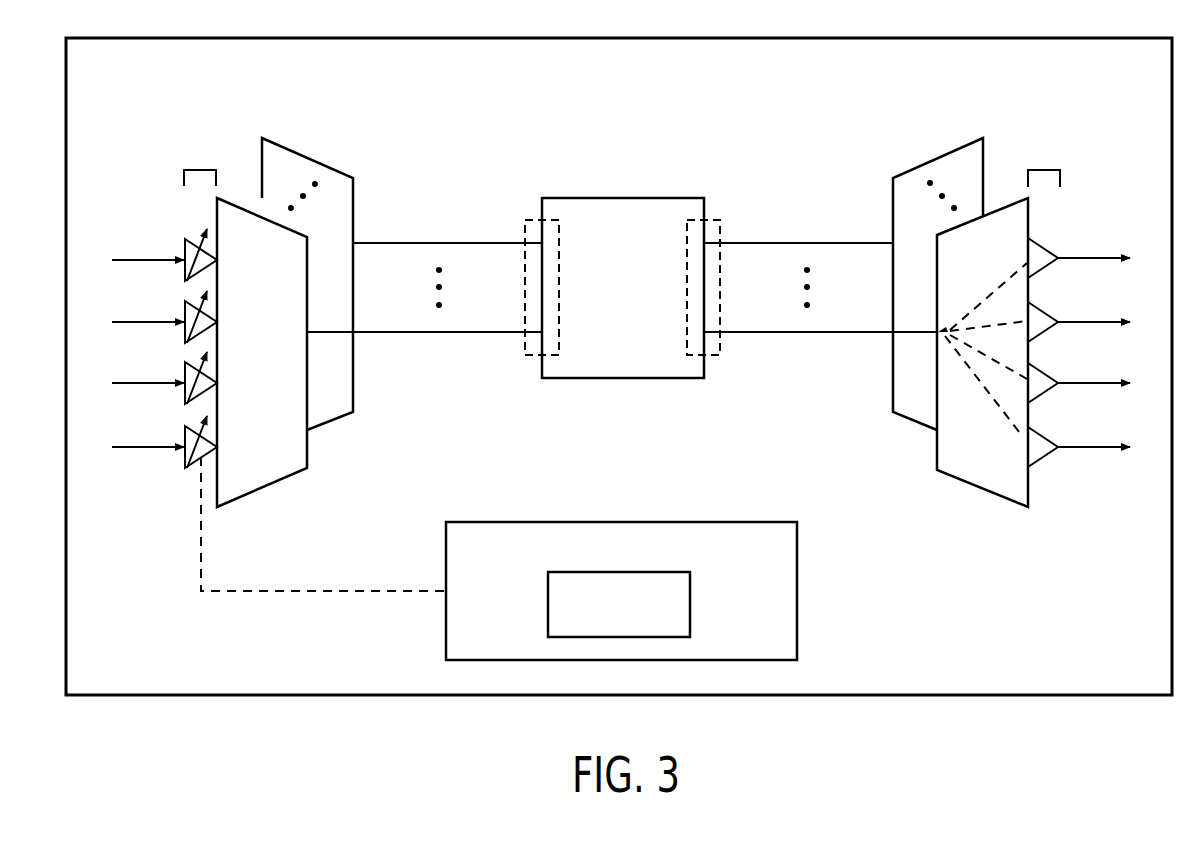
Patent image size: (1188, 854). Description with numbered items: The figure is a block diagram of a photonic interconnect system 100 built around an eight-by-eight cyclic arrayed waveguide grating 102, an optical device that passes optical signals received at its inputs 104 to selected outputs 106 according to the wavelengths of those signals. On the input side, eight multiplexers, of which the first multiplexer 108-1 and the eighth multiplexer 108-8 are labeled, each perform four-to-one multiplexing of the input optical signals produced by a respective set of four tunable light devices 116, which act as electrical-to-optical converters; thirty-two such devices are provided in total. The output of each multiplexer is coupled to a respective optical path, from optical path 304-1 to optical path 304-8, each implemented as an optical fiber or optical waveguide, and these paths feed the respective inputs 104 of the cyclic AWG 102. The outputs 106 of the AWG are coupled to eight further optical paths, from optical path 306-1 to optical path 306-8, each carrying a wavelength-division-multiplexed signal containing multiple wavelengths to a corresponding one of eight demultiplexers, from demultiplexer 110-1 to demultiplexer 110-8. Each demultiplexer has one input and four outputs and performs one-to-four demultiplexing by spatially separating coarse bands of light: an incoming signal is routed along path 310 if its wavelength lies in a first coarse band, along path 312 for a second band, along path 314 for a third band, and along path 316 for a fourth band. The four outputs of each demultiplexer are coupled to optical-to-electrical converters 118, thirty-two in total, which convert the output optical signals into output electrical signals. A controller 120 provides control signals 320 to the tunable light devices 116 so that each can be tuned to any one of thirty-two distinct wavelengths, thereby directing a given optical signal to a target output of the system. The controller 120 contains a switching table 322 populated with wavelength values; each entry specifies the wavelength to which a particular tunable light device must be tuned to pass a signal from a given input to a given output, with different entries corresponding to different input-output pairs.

The photonic interconnect system 100 is at (619, 38).
The cyclic arrayed waveguide grating 102 is at (622, 198).
The inputs of the AWG 104 is at (532, 355).
The outputs of the AWG 106 is at (717, 355).
The multiplexer 108-1 is at (263, 492).
The multiplexer 108-8 is at (330, 422).
The demultiplexer 110-1 is at (982, 487).
The demultiplexer 110-8 is at (918, 422).
The tunable light devices 116 is at (200, 170).
The optical-to-electrical converters 118 is at (1047, 170).
The controller 120 is at (622, 522).
The optical path 304-1 is at (418, 332).
The optical path 304-8 is at (417, 243).
The optical path 306-1 is at (827, 332).
The optical path 306-8 is at (827, 243).
The path 310 is at (1013, 423).
The path 312 is at (1005, 368).
The path 314 is at (1003, 322).
The path 316 is at (967, 312).
The control signals 320 is at (325, 591).
The switching table 322 is at (690, 600).